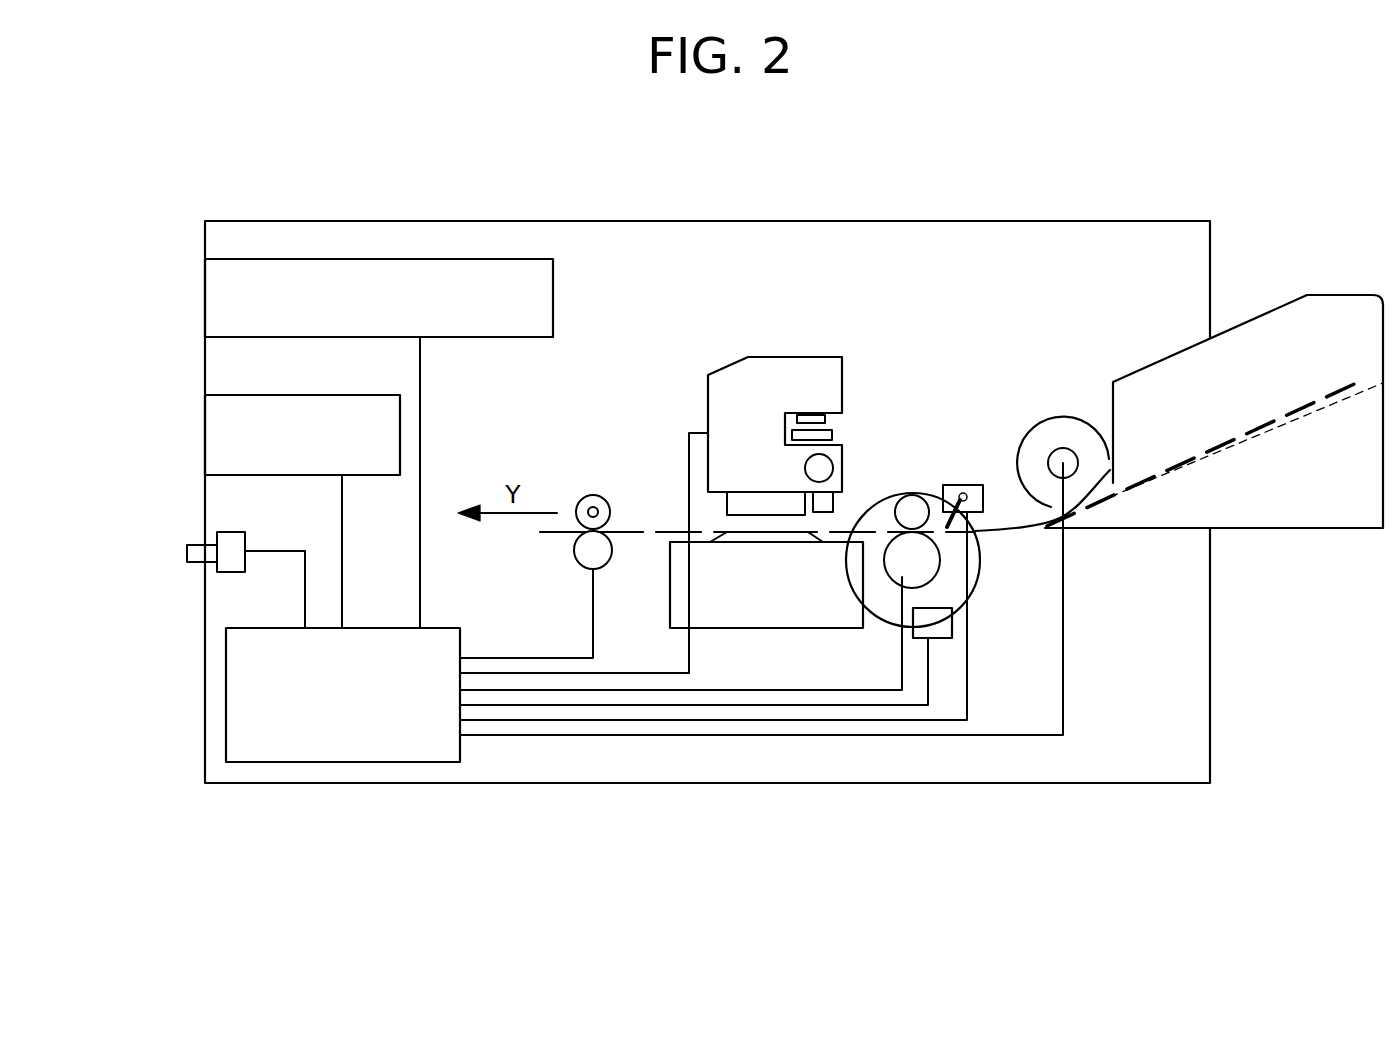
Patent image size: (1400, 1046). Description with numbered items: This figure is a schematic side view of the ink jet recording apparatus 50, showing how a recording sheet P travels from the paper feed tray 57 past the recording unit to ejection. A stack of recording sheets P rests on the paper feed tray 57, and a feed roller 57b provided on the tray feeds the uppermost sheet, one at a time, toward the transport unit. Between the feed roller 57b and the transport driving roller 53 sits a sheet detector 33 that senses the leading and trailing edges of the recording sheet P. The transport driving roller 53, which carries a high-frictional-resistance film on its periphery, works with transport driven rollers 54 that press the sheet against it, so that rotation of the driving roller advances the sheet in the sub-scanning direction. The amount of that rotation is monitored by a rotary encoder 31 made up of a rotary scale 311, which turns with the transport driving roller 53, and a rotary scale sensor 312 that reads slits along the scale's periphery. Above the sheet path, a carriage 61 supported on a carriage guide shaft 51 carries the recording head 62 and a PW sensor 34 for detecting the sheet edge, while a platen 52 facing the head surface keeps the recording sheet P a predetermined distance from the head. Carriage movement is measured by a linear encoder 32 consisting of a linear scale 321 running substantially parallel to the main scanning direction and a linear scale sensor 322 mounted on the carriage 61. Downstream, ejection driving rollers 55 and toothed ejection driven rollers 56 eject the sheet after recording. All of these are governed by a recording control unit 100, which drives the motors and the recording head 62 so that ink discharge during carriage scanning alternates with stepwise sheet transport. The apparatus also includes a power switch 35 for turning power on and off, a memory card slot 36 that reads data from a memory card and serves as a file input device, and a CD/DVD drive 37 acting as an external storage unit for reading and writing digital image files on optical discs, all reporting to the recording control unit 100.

The ink jet recording apparatus 50 is at (360, 212).
The CD/DVD drive 37 is at (206, 288).
The memory card slot 36 is at (206, 422).
The power switch 35 is at (187, 553).
The recording control unit 100 is at (305, 762).
The ejection driven rollers 56 is at (595, 495).
The ejection driving rollers 55 is at (600, 562).
The carriage 61 is at (722, 368).
The linear encoder 32 is at (802, 345).
The linear scale 321 is at (792, 434).
The linear scale sensor 322 is at (812, 423).
The carriage guide shaft 51 is at (818, 468).
The PW sensor 34 is at (834, 503).
The recording head 62 is at (778, 513).
The platen 52 is at (850, 613).
The rotary encoder 31 is at (958, 707).
The rotary scale 311 is at (970, 577).
The rotary scale sensor 312 is at (937, 623).
The transport driven rollers 54 is at (928, 497).
The transport driving roller 53 is at (933, 562).
The sheet detector 33 is at (970, 486).
The feed roller 57b is at (1055, 420).
The paper feed tray 57 is at (1268, 329).
The recording sheet P is at (1330, 405).